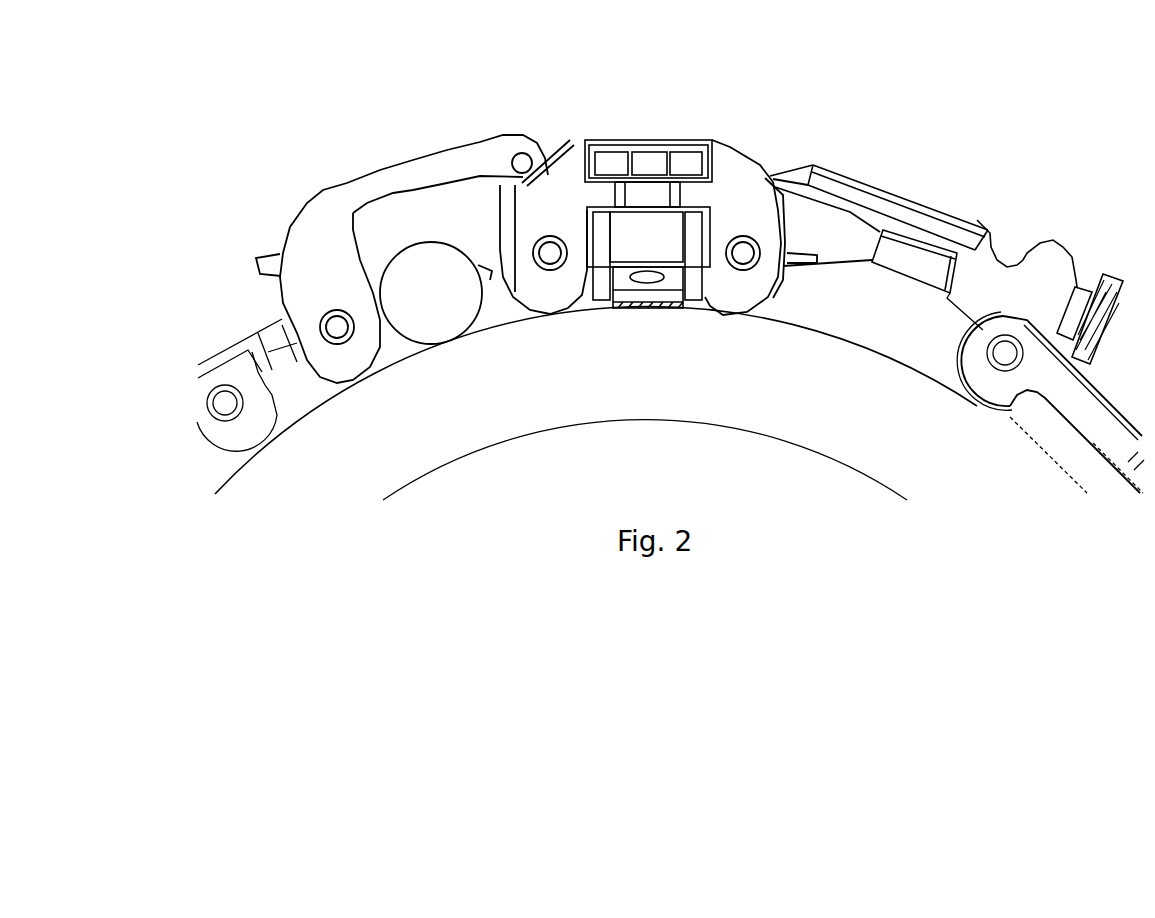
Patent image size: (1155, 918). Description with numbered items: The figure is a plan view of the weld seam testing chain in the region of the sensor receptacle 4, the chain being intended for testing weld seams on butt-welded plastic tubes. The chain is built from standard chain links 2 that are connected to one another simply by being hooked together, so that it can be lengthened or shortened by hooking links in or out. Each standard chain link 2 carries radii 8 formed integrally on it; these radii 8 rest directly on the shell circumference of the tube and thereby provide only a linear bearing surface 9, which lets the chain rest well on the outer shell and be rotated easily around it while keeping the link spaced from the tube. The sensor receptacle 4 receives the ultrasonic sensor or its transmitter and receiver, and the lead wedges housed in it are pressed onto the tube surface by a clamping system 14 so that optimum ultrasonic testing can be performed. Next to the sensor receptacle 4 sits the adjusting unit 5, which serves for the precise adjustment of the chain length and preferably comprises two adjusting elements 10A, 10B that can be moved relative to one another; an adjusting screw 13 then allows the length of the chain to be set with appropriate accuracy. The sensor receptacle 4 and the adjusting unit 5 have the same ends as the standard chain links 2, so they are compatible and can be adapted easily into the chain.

The standard chain link 2 is at (1076, 432).
The sensor receptacle 4 is at (568, 208).
The adjusting unit 5 is at (950, 212).
The radii 8 is at (990, 424).
The bearing surface 9 is at (944, 429).
The adjusting element 10A is at (891, 297).
The adjusting element 10B is at (882, 153).
The adjusting screw 13 is at (1107, 235).
The clamping system 14 is at (569, 223).